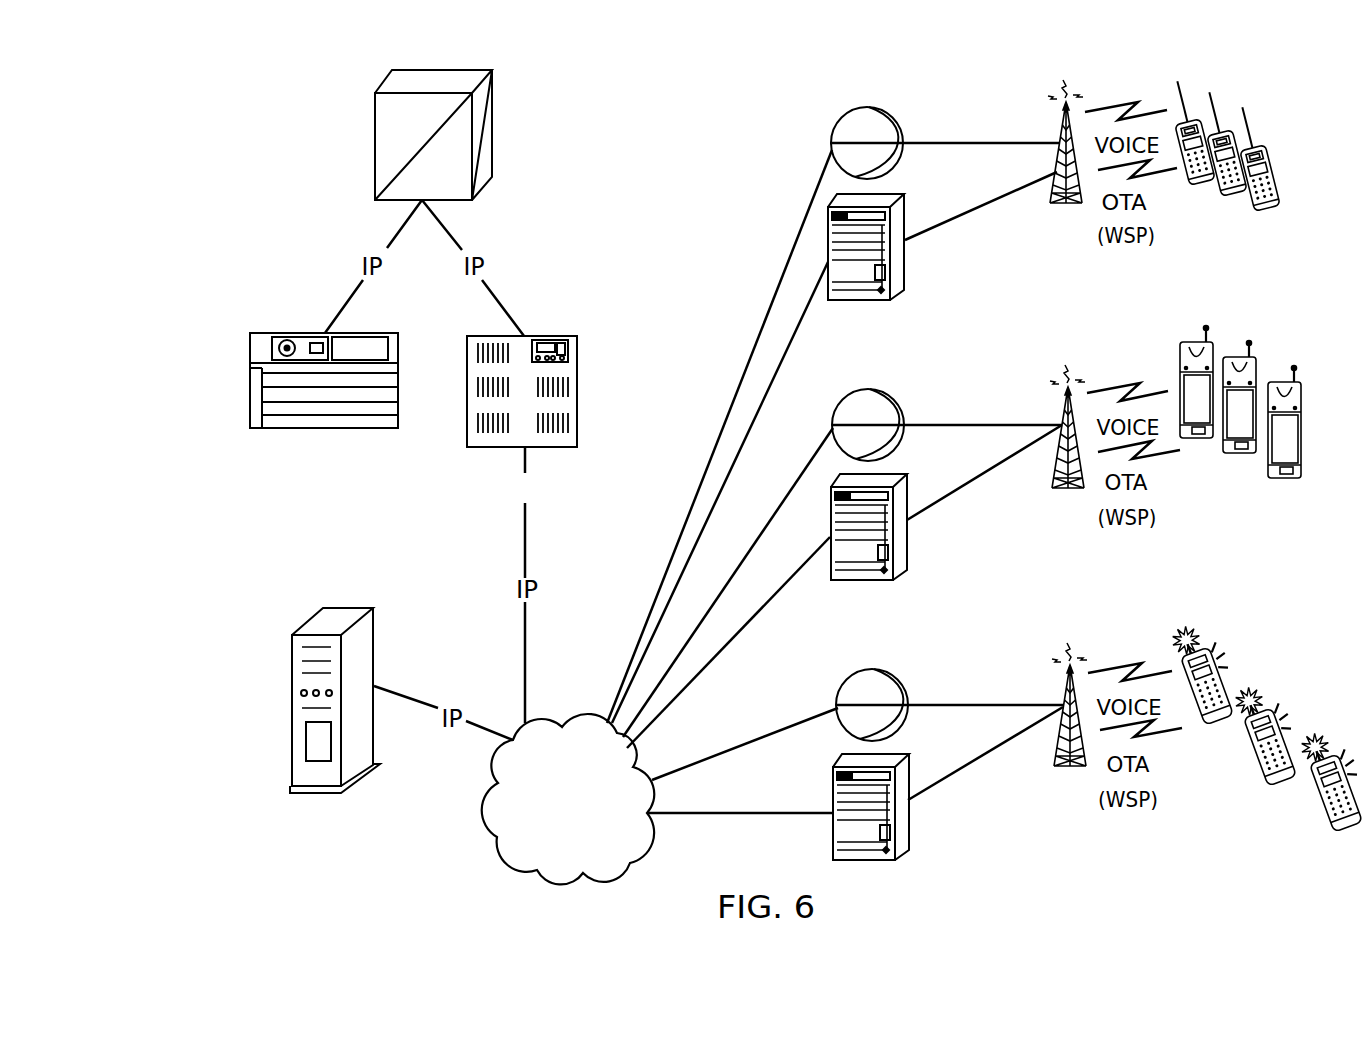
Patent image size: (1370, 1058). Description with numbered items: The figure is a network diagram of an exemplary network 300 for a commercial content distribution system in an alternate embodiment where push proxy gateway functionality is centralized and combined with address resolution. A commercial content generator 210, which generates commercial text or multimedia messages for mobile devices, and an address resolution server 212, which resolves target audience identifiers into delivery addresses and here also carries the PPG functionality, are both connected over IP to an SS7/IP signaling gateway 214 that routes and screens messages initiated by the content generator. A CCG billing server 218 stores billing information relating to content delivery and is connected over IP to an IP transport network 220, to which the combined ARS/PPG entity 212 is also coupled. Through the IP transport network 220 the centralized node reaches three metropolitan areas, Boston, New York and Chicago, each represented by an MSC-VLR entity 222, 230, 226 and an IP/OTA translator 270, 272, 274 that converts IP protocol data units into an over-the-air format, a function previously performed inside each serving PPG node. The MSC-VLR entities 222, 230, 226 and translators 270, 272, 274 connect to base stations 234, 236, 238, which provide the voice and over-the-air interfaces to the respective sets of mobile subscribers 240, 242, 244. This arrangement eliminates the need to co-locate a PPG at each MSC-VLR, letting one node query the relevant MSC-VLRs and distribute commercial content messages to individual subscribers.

The network 300 is at (235, 142).
The commercial content generator 210 is at (282, 333).
The address resolution server 212 is at (566, 334).
The SS7/IP signaling gateway 214 is at (493, 115).
The CCG billing server 218 is at (309, 619).
The IP transport network 220 is at (545, 715).
The MSC-VLR entity 222 is at (902, 130).
The MSC-VLR entity 226 is at (905, 692).
The MSC-VLR entity 230 is at (903, 412).
The base station 234 is at (1068, 82).
The base station 236 is at (1070, 365).
The base station 238 is at (1072, 645).
The set of mobile subscribers 240 is at (1238, 88).
The set of mobile subscribers 242 is at (1265, 338).
The set of mobile subscribers 244 is at (1283, 683).
The IP/OTA translator 270 is at (905, 260).
The IP/OTA translator 272 is at (907, 542).
The IP/OTA translator 274 is at (908, 823).